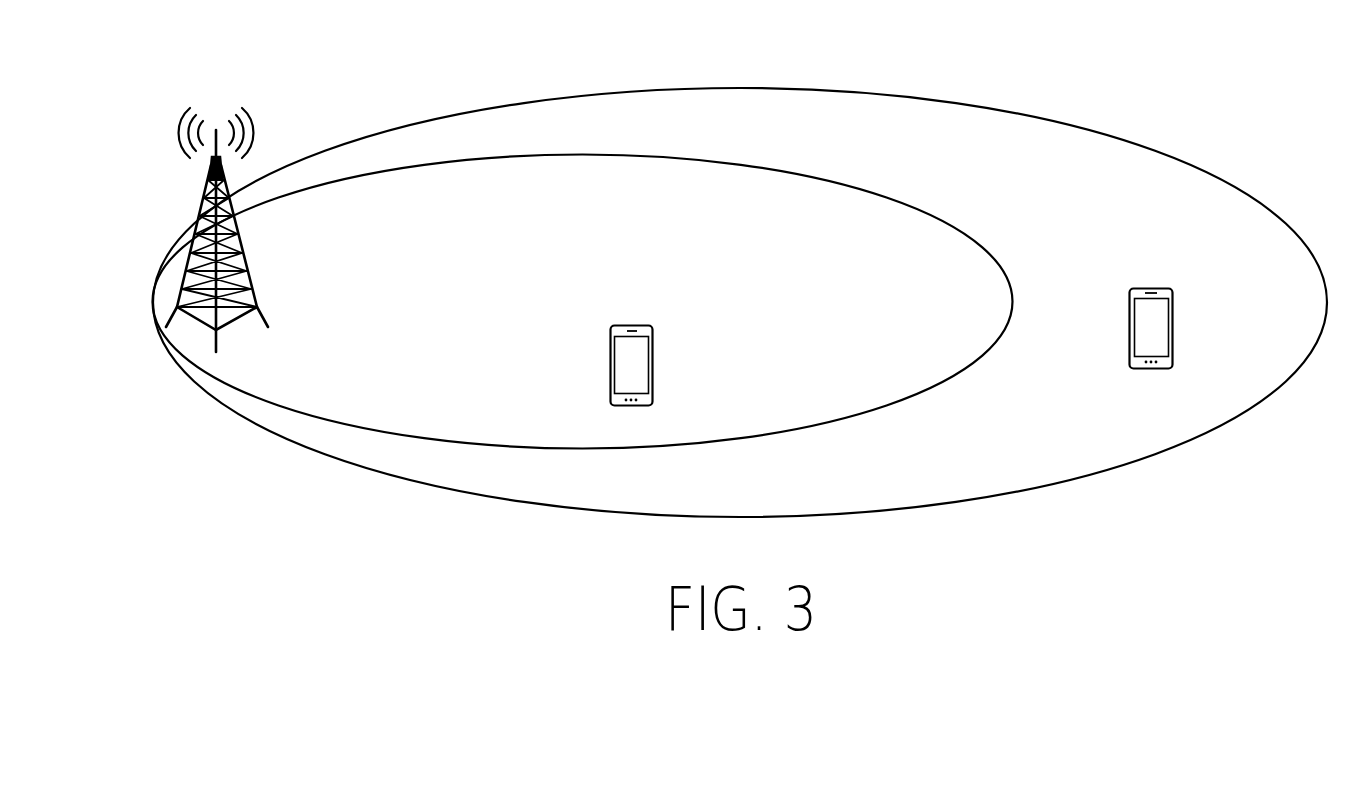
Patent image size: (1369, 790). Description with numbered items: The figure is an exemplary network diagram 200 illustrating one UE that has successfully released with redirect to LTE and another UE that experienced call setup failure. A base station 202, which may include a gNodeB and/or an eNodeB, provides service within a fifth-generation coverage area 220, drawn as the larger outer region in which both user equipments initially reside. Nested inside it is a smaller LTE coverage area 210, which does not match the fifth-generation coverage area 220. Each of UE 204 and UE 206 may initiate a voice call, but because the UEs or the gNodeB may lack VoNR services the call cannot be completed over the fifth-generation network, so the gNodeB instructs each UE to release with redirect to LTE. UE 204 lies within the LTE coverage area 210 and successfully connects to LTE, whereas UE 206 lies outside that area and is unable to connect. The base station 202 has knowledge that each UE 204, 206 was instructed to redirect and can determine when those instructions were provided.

The network diagram 200 is at (429, 633).
The base station 202 is at (212, 90).
The UE 204 is at (624, 323).
The UE 206 is at (1150, 287).
The LTE coverage area 210 is at (636, 155).
The 5G coverage area 220 is at (797, 88).